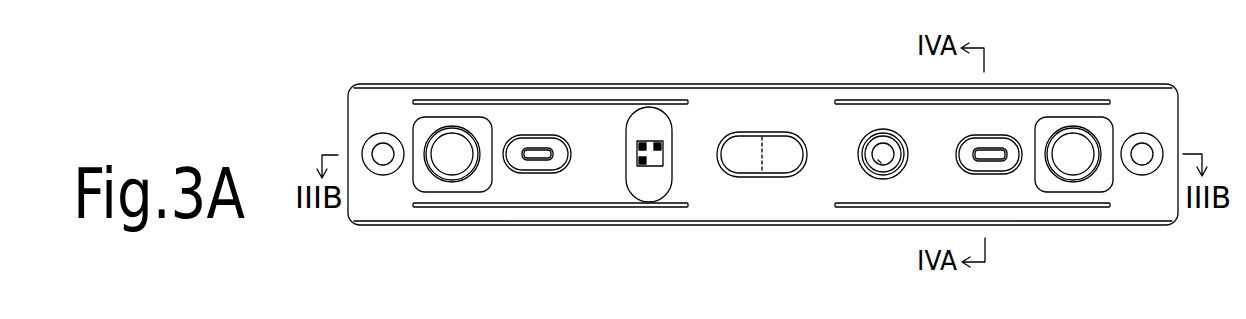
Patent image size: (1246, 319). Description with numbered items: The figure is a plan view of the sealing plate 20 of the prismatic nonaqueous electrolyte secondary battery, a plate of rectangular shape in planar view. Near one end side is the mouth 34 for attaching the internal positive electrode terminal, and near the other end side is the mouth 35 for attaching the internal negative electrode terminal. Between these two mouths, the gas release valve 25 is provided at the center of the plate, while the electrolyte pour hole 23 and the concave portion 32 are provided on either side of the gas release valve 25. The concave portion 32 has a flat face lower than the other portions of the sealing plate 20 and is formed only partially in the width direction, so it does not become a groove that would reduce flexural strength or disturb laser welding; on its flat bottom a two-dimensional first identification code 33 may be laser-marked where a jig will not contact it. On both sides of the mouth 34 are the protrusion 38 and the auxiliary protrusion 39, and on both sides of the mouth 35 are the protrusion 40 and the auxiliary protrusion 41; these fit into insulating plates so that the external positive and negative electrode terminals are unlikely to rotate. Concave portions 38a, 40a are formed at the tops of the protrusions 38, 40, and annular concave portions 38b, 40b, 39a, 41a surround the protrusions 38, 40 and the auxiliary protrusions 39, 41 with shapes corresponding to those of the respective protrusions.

The sealing plate 20 is at (797, 108).
The auxiliary protrusion 41 is at (391, 135).
The annular concave portion 41a is at (383, 176).
The mouth for attaching the internal negative electrode terminal 35 is at (451, 152).
The protrusion 40 is at (543, 134).
The concave portion 40a is at (532, 160).
The annular concave portion 40b is at (550, 162).
The concave portion 32 is at (648, 113).
The first identification code 33 is at (649, 167).
The gas release valve 25 is at (745, 160).
The electrolyte pour hole 23 is at (883, 156).
The protrusion 38 is at (992, 132).
The concave portion 38a is at (989, 160).
The annular concave portion 38b is at (1000, 165).
The mouth for attaching the internal positive electrode terminal 34 is at (1073, 152).
The auxiliary protrusion 39 is at (1140, 133).
The annular concave portion 39a is at (1142, 176).